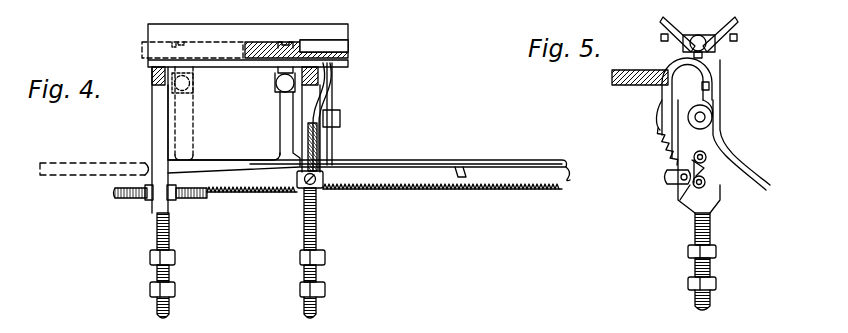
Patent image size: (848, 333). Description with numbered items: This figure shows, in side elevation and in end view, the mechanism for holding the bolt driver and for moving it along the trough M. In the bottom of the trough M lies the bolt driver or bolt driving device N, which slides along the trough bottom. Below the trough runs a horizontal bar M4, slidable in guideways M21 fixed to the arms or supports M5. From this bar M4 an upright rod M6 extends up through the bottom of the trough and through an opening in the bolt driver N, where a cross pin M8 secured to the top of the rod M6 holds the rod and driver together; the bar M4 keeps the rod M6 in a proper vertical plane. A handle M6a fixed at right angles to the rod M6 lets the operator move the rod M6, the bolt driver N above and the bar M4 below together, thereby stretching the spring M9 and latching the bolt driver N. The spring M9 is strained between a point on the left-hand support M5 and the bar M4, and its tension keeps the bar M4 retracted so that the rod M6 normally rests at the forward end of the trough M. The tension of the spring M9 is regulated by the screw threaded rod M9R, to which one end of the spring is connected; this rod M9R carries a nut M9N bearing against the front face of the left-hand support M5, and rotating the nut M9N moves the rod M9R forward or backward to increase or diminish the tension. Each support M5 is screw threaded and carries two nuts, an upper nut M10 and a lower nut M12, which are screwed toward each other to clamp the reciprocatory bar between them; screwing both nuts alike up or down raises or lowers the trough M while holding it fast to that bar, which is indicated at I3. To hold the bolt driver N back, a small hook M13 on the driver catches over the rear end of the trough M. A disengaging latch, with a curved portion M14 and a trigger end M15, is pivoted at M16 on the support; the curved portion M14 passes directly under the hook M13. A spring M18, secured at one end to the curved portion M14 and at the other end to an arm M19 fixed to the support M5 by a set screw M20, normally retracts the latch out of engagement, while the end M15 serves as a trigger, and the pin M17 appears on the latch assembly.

In FIG. 4, the trough M is at (318, 36).
In FIG. 5, the trough M is at (696, 35).
In FIG. 4, the bolt driver N is at (348, 48).
In FIG. 5, the bolt driver N is at (706, 40).
In FIG. 4, the cross pin M8 is at (284, 44).
In FIG. 5, the cross pin M8 is at (690, 34).
In FIG. 4, the handle M6a is at (277, 86).
In FIG. 5, the handle M6a is at (614, 79).
In FIG. 4, the rod M6 is at (285, 125).
In FIG. 4, the hook M13 is at (330, 63).
In FIG. 5, the hook M13 is at (703, 57).
In FIG. 4, the support M5 is at (162, 210).
In FIG. 5, the support M5 is at (708, 212).
In FIG. 4, the upper nut M10 is at (176, 257).
In FIG. 5, the upper nut M10 is at (717, 254).
In FIG. 4, the lower nut M12 is at (176, 289).
In FIG. 5, the lower nut M12 is at (717, 286).
In FIG. 4, the horizontal bar M4 is at (398, 163).
In FIG. 5, the horizontal bar M4 is at (703, 162).
In FIG. 4, the spring M9 is at (400, 186).
In FIG. 5, the spring M9 is at (697, 186).
In FIG. 4, the nut M9N is at (138, 199).
In FIG. 4, the screw threaded rod M9R is at (188, 198).
In FIG. 4, the frame I3 is at (268, 278).
In FIG. 5, the curved portion of latch M14 is at (667, 68).
In FIG. 5, the pin M17 is at (710, 87).
In FIG. 5, the pivot M16 is at (712, 118).
In FIG. 5, the trigger end of latch M15 is at (745, 150).
In FIG. 5, the spring M18 is at (658, 142).
In FIG. 5, the guideway M21 is at (698, 162).
In FIG. 5, the set screw M20 is at (667, 178).
In FIG. 5, the arm M19 is at (662, 186).